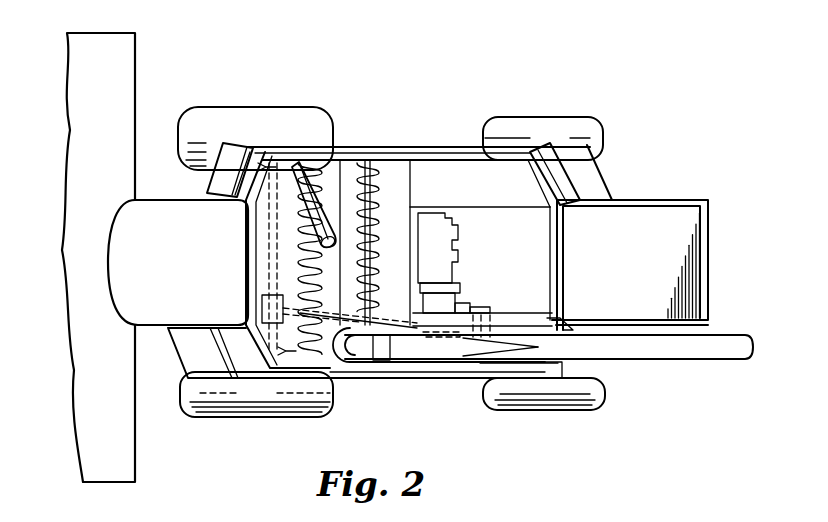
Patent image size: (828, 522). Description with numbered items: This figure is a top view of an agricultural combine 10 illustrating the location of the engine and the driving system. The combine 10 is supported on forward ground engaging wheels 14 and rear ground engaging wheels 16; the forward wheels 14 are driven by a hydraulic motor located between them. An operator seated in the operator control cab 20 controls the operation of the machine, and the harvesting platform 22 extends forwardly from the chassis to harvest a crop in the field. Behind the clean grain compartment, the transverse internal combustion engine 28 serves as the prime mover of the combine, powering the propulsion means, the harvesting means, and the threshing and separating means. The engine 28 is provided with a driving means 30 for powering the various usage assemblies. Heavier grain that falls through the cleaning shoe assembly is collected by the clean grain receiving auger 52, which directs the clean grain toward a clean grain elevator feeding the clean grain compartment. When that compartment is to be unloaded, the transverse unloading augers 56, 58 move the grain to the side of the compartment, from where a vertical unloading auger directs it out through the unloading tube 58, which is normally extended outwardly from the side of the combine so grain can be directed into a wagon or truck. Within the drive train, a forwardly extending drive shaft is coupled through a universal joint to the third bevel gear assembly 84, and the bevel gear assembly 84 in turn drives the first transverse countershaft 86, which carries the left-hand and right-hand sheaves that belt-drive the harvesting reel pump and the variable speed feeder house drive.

The agricultural combine 10 is at (522, 72).
The forward ground engaging wheels 14 is at (228, 117).
The ground engaging wheels 16 is at (585, 123).
The operator control cab 20 is at (188, 278).
The harvesting platform 22 is at (108, 183).
The transverse internal combustion engine 28 is at (470, 200).
The driving means 30 is at (471, 299).
The clean grain receiving auger 52 is at (318, 194).
The transverse unloading auger 56 is at (326, 160).
The transverse unloading auger / unloading tube 58 is at (366, 157).
The third bevel gear assembly 84 is at (262, 310).
The first transverse countershaft 86 is at (269, 221).